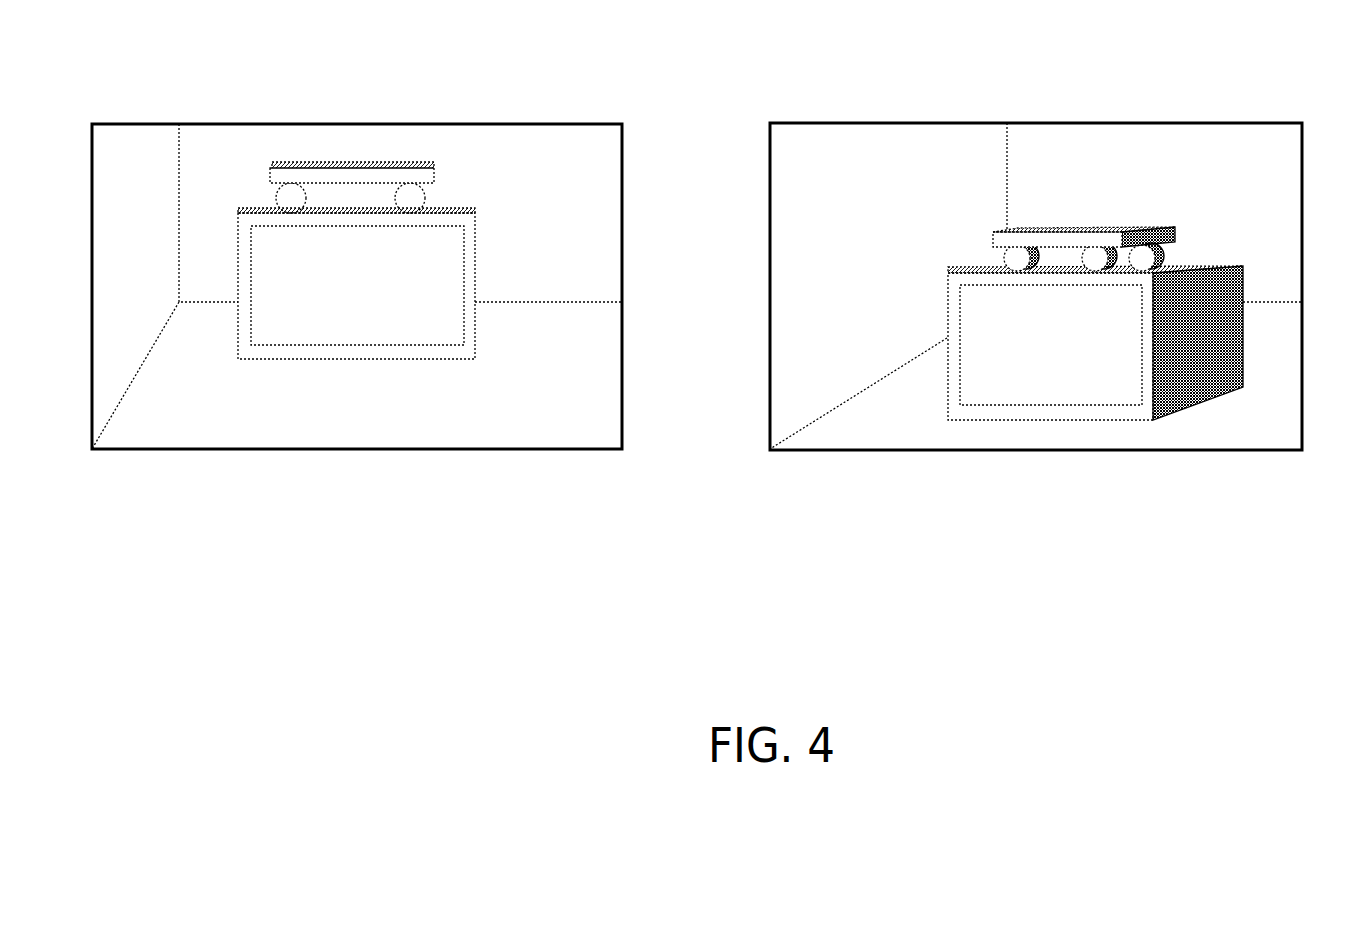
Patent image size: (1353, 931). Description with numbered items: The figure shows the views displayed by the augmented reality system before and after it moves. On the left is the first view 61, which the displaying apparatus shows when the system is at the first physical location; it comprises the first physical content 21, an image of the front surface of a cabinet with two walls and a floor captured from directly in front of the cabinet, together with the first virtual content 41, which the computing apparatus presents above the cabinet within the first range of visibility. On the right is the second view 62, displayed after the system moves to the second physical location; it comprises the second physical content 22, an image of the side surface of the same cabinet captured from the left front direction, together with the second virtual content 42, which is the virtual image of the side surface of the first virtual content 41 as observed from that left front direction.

The first view 61 is at (357, 247).
The second view 62 is at (1036, 248).
The first virtual content 41 is at (490, 188).
The second virtual content 42 is at (1175, 205).
The first physical content 21 is at (607, 432).
The second physical content 22 is at (1288, 434).